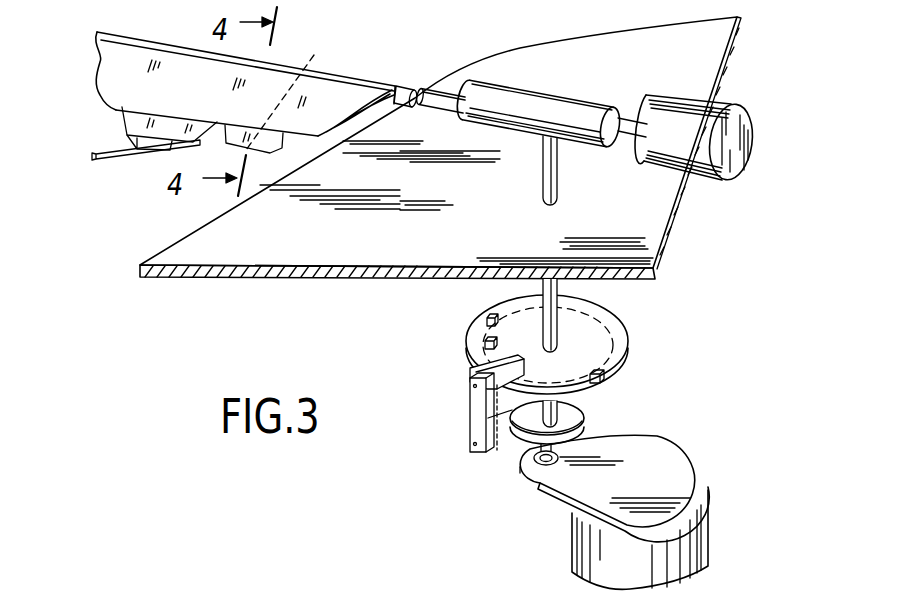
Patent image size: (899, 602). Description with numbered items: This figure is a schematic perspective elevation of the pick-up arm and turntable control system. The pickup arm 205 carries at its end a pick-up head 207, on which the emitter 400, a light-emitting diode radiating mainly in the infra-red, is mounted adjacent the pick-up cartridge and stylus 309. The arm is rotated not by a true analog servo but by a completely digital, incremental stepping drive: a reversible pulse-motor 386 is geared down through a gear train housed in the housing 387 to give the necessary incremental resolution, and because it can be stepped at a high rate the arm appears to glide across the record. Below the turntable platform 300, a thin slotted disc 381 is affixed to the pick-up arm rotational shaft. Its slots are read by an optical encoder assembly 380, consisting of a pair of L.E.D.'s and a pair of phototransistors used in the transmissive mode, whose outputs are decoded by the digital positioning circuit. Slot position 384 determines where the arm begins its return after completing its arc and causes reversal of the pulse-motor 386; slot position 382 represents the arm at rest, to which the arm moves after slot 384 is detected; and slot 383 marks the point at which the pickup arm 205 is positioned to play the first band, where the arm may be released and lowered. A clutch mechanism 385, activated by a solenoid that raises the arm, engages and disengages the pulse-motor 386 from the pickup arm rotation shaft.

The pickup arm 205 is at (440, 93).
The pick-up head 207 is at (117, 70).
The turntable platform 300 is at (717, 52).
The pick-up cartridge and stylus 309 is at (93, 160).
The optical encoder assembly 380 is at (470, 376).
The thin slotted disc 381 is at (625, 333).
The rest slot position 382 is at (489, 318).
The play slot position 383 is at (485, 344).
The return slot position 384 is at (606, 376).
The clutch mechanism 385 is at (573, 428).
The pulse-motor 386 is at (590, 538).
The gear train housing 387 is at (690, 456).
The emitter 400 is at (306, 58).